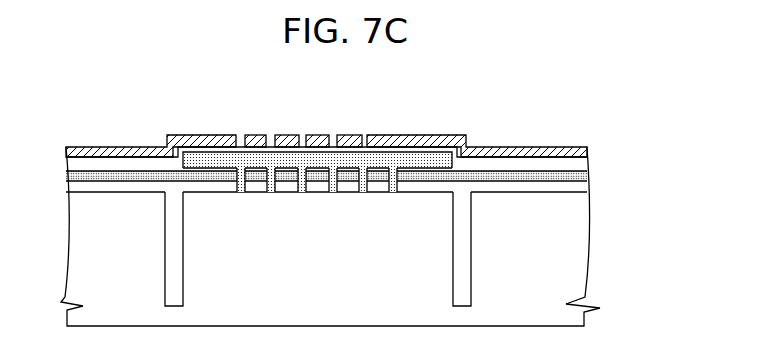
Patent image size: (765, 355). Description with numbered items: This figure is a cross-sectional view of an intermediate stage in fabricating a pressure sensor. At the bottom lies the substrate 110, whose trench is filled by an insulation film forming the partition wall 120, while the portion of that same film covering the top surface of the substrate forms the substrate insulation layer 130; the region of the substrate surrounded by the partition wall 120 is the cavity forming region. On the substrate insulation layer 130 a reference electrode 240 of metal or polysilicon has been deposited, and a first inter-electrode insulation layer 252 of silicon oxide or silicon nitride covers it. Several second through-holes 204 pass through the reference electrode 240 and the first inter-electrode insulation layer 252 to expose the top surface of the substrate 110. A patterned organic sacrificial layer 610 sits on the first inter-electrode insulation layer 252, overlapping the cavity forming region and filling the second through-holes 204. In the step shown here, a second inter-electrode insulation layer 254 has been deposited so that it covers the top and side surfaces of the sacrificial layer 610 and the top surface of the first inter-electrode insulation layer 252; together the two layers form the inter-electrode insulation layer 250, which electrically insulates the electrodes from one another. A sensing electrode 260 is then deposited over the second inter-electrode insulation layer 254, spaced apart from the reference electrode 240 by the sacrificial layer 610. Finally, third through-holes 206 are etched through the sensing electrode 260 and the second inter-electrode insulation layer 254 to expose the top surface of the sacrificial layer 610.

The substrate 110 is at (573, 281).
The partition wall 120 is at (460, 248).
The substrate insulation layer 130 is at (586, 191).
The reference electrode 240 is at (576, 186).
The inter-electrode insulation layer 250 is at (385, 159).
The first inter-electrode insulation layer 252 is at (586, 177).
The second inter-electrode insulation layer 254 is at (586, 162).
The sensing electrode 260 is at (560, 147).
The sacrificial layer 610 is at (417, 158).
The second through-hole 204 is at (271, 190).
The third through-hole 206 is at (332, 137).